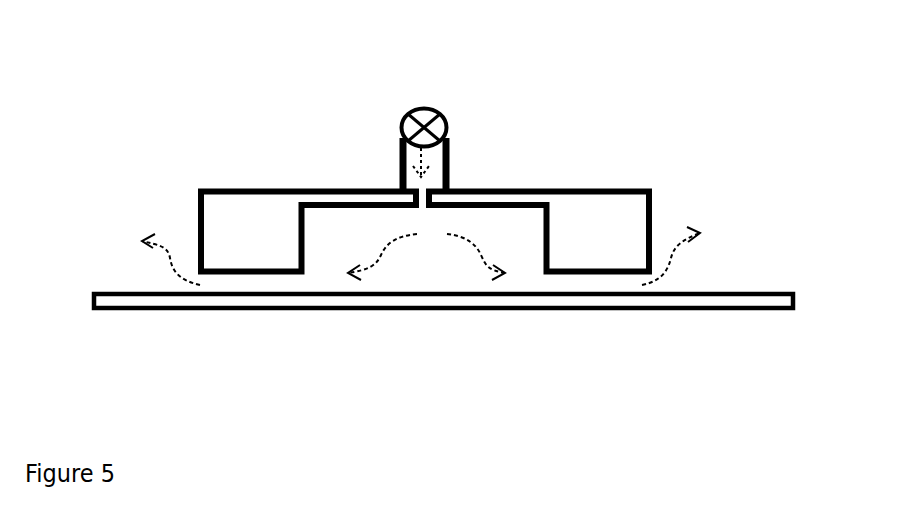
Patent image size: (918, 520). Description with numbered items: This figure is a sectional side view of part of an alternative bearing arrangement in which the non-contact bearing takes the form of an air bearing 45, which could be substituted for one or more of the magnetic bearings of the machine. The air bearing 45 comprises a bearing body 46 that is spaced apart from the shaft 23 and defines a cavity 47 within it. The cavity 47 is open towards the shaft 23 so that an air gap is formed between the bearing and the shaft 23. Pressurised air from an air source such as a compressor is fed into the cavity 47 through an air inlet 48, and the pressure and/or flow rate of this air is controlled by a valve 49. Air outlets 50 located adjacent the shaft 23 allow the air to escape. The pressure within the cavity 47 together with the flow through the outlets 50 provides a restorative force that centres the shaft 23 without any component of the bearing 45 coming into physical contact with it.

The shaft 23 is at (722, 310).
The air bearing 45 is at (368, 347).
The bearing body 46 is at (262, 216).
The cavity 47 is at (518, 235).
The air inlet 48 is at (443, 168).
The valve 49 is at (422, 105).
The air outlets 50 is at (662, 263).